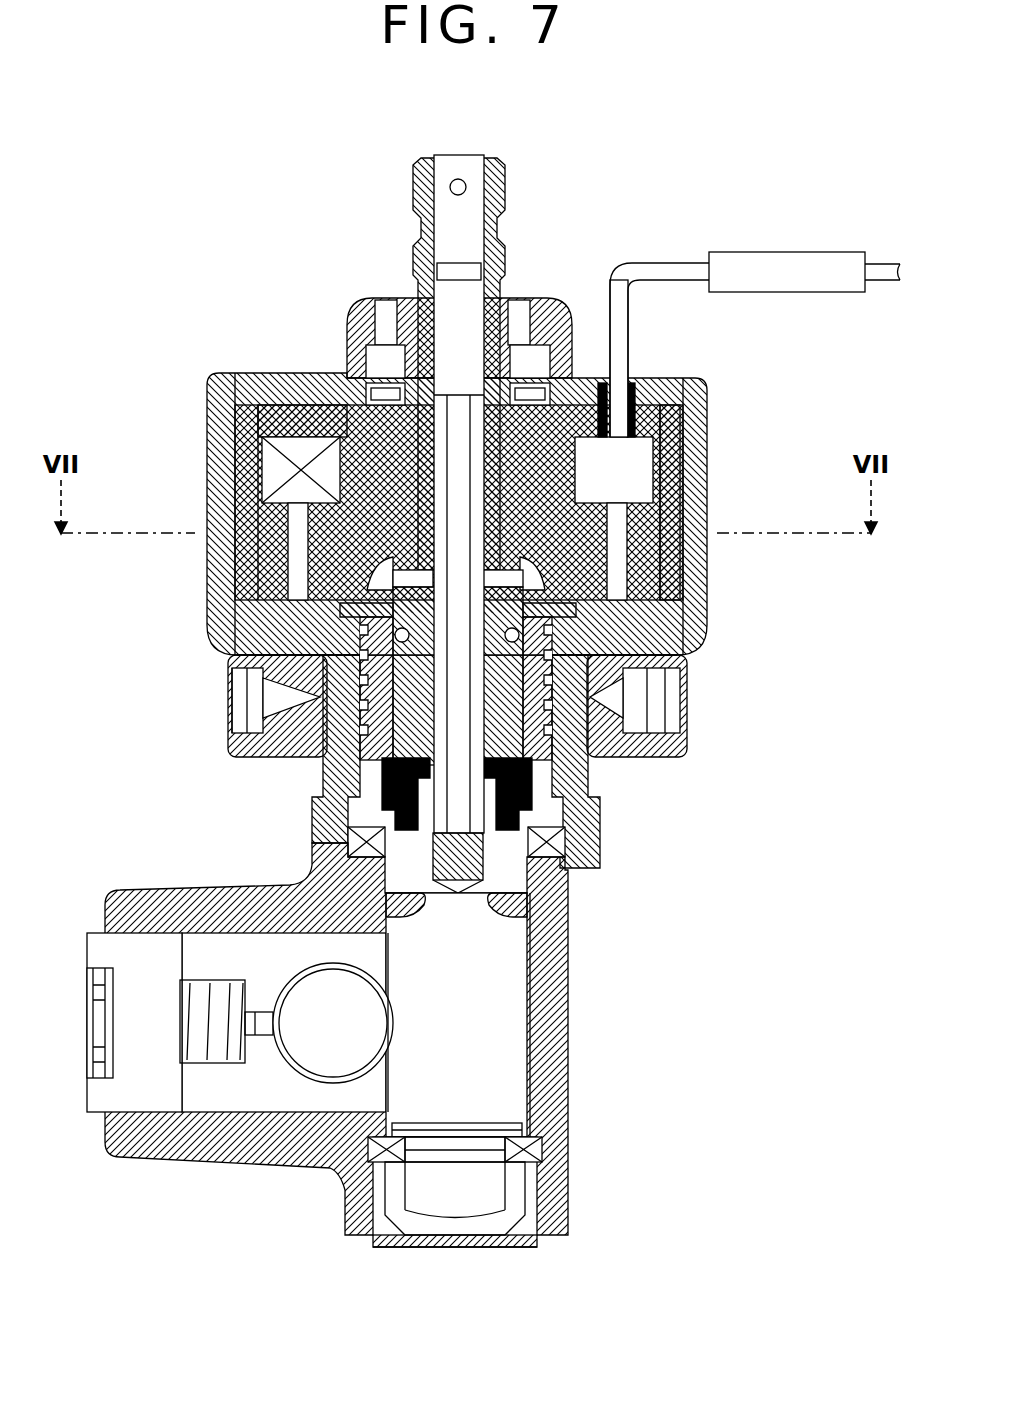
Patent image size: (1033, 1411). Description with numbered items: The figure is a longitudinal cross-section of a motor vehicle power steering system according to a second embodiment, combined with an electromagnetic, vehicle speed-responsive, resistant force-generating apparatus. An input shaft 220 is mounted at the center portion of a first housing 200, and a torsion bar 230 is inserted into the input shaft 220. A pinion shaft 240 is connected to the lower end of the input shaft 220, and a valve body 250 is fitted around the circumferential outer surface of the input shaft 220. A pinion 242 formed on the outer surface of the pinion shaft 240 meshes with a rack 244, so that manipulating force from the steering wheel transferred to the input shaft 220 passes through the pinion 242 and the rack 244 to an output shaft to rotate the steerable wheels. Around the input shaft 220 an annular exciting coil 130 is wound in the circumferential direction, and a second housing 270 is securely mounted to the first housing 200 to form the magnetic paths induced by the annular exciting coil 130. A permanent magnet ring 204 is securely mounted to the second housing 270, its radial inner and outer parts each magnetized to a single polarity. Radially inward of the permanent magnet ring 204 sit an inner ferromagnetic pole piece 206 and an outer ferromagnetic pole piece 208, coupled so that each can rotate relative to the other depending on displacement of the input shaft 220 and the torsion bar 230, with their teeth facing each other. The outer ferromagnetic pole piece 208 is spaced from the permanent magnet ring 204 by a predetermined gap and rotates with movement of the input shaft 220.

The annular exciting coil 130 is at (262, 425).
The first housing 200 is at (707, 470).
The permanent magnet ring 204 is at (680, 567).
The inner ferromagnetic pole piece 206 is at (597, 540).
The outer ferromagnetic pole piece 208 is at (677, 623).
The input shaft 220 is at (497, 183).
The torsion bar 230 is at (475, 300).
The pinion shaft 240 is at (565, 868).
The pinion 242 is at (522, 1070).
The rack 244 is at (320, 1077).
The valve body 250 is at (570, 740).
The second housing 270 is at (665, 405).